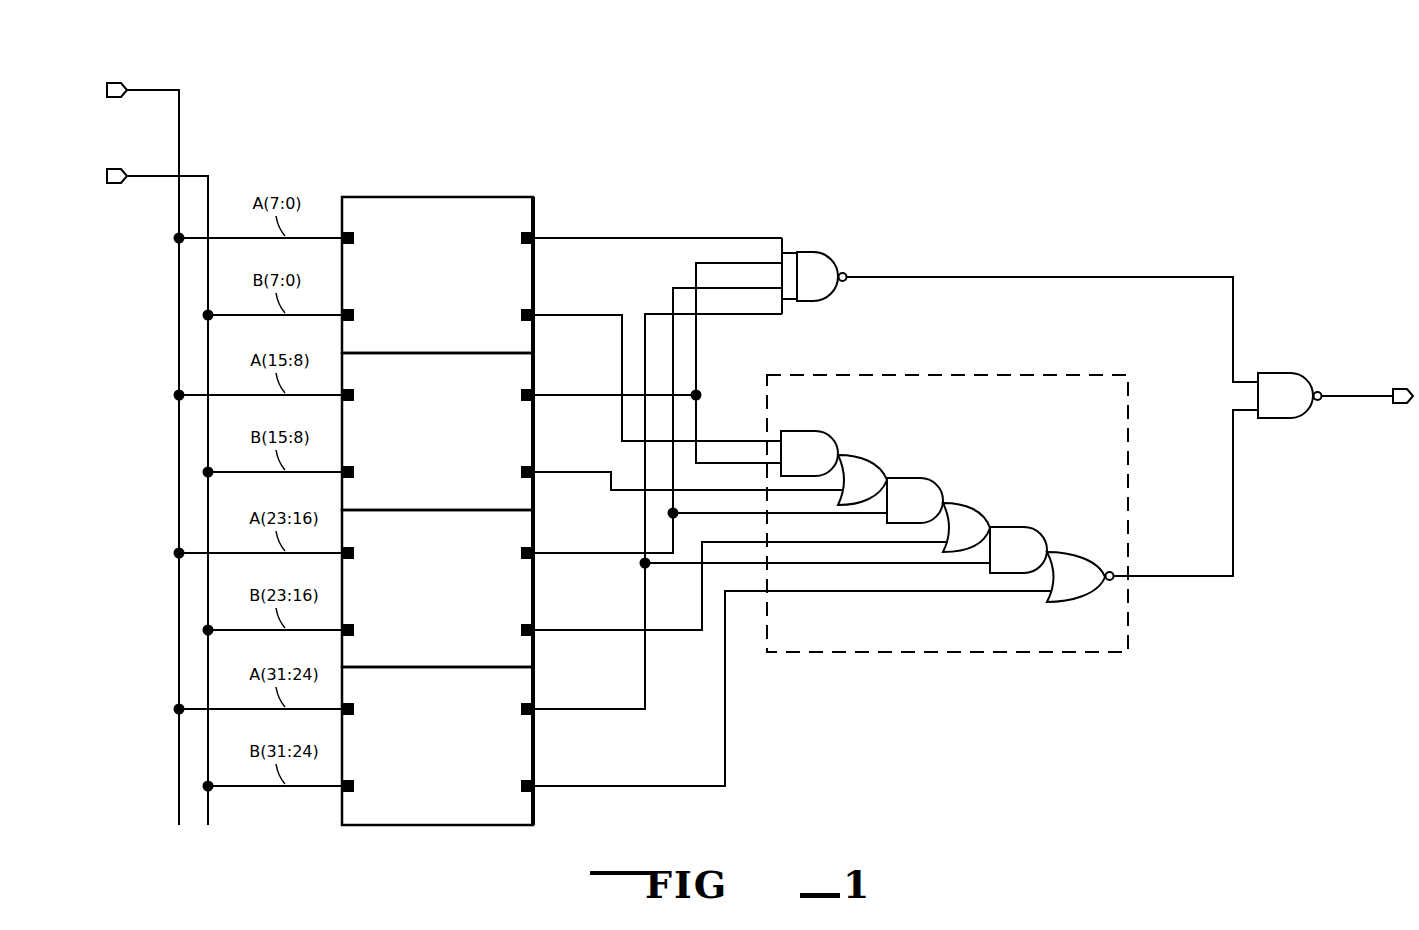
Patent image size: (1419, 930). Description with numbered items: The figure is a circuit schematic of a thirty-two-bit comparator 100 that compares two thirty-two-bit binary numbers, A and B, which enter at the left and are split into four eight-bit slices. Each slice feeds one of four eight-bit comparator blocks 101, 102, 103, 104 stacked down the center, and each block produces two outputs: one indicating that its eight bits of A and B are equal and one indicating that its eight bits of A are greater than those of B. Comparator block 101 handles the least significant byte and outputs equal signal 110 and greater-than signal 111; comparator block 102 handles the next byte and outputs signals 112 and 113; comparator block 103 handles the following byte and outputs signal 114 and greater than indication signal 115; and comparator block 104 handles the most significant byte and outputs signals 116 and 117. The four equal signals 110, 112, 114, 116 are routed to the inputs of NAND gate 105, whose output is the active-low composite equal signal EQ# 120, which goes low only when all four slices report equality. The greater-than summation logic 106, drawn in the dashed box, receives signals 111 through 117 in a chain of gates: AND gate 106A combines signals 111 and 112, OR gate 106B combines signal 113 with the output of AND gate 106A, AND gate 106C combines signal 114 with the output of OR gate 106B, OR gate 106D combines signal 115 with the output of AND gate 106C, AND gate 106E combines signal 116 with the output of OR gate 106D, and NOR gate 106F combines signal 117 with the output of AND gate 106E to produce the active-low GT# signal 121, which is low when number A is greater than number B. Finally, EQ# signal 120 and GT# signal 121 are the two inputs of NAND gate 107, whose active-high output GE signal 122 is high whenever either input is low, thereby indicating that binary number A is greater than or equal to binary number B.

The 32-bit comparator 100 is at (419, 152).
The comparator block 101 is at (527, 215).
The comparator block 102 is at (523, 370).
The comparator block 103 is at (527, 528).
The comparator block 104 is at (527, 686).
The NAND gate 105 is at (826, 262).
The greater-than summation logic 106 is at (947, 513).
The AND gate 106A is at (828, 432).
The OR gate 106B is at (870, 456).
The AND gate 106C is at (930, 478).
The OR gate 106D is at (975, 504).
The AND gate 106E is at (1032, 528).
The NOR gate 106F is at (1083, 552).
The NAND gate 107 is at (1290, 370).
The signal 110 is at (625, 236).
The signal 111 is at (585, 313).
The signal 112 is at (590, 394).
The signal 113 is at (570, 471).
The signal 114 is at (603, 552).
The greater than indication signal 115 is at (587, 629).
The signal 116 is at (606, 708).
The signal 117 is at (593, 785).
The EQ# signal 120 is at (1055, 280).
The GT# signal 121 is at (1180, 578).
The greater-than-or-equal-to signal 122 is at (1360, 400).